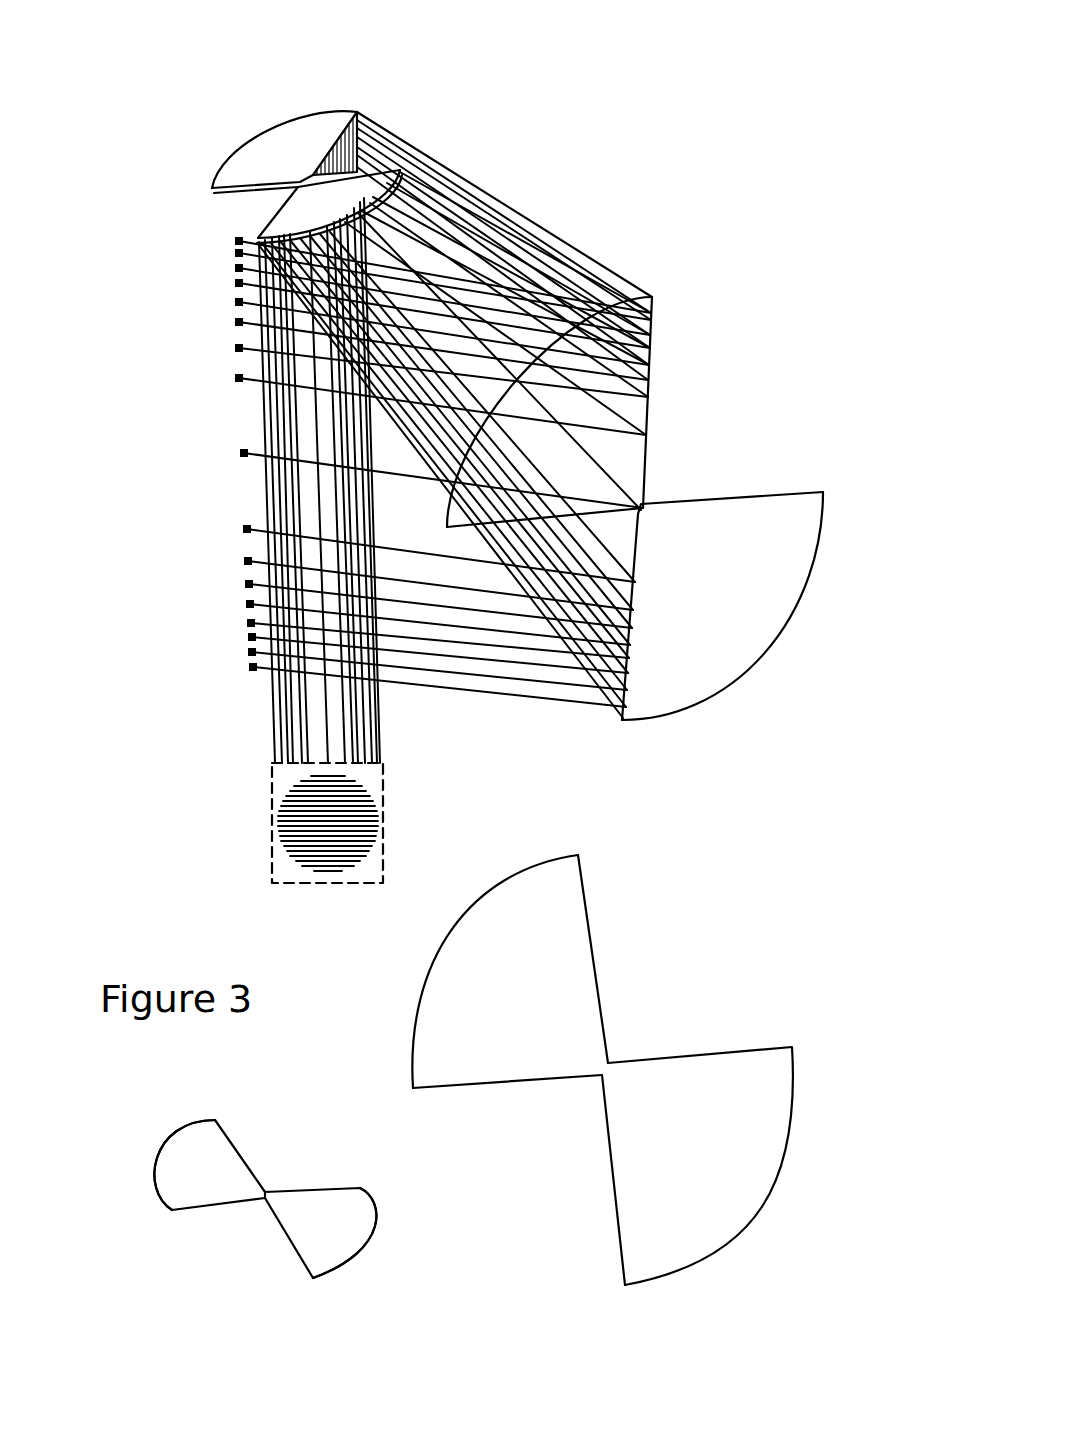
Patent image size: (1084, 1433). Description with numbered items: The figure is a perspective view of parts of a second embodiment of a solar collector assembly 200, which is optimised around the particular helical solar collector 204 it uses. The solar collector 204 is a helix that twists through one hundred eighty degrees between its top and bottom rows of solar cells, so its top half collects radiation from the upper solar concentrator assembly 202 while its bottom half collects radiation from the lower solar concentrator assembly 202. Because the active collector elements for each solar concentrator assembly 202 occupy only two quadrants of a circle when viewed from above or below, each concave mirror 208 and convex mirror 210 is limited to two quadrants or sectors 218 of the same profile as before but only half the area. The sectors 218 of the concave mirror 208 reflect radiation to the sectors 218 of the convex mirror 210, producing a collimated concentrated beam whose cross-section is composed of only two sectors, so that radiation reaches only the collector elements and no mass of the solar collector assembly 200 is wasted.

The solar collector assembly 200 is at (178, 140).
The solar concentrator assembly 202 is at (712, 262).
The solar collector 204 is at (275, 832).
The concave mirror 208 is at (800, 602).
The convex mirror 210 is at (288, 125).
The quadrants or sectors 218 is at (303, 198).